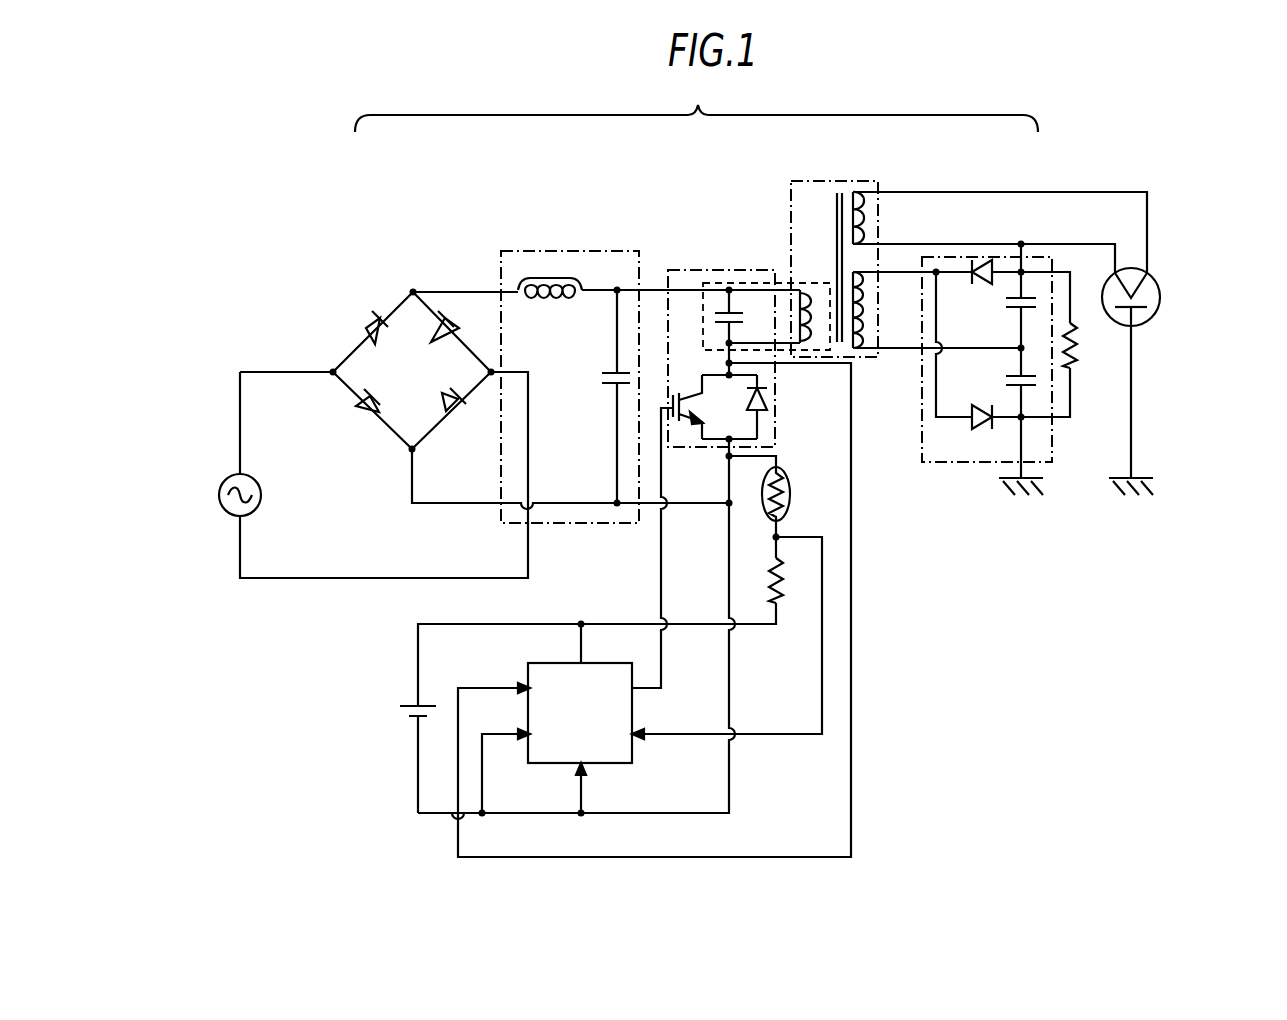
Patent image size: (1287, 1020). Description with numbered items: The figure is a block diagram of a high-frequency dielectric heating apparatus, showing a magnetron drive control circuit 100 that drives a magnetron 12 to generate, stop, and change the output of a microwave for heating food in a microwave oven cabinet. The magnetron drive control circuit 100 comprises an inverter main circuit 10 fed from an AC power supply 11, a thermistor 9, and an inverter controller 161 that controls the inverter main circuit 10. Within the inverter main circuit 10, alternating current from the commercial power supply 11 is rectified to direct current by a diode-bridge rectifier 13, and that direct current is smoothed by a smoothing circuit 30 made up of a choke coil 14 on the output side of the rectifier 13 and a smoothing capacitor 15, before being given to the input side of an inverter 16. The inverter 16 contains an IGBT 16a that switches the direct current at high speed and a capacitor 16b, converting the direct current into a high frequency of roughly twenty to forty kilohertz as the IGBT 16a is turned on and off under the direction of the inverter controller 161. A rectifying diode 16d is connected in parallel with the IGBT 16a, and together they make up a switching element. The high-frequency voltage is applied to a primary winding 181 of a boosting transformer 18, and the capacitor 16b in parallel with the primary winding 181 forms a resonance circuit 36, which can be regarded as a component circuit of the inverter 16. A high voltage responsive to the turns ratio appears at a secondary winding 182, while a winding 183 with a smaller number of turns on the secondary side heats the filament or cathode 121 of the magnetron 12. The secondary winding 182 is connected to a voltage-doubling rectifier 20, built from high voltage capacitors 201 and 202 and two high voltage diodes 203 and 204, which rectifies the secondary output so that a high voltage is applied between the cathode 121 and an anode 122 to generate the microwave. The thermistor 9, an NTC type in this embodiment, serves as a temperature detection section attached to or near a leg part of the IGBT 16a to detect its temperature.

The magnetron drive control circuit 100 is at (240, 314).
The inverter main circuit 10 is at (698, 105).
The AC power supply 11 is at (262, 492).
The rectifier 13 is at (425, 378).
The choke coil 14 is at (548, 278).
The smoothing capacitor 15 is at (606, 390).
The smoothing circuit 30 is at (523, 250).
The resonance circuit 36 is at (757, 278).
The inverter 16 is at (729, 414).
The IGBT 16a is at (700, 383).
The capacitor 16b is at (723, 287).
The rectifying diode 16d is at (765, 400).
The inverter controller 161 is at (622, 745).
The thermistor 9 is at (791, 487).
The boosting transformer 18 is at (868, 265).
The primary winding 181 is at (802, 294).
The secondary winding 182 is at (877, 330).
The winding 183 is at (872, 232).
The voltage-doubling rectifier 20 is at (1022, 374).
The high voltage capacitor 201 is at (1030, 386).
The high voltage capacitor 202 is at (1027, 297).
The high voltage diode 203 is at (986, 285).
The high voltage diode 204 is at (980, 405).
The magnetron 12 is at (1183, 293).
The filament (cathode) 121 is at (1157, 283).
The anode 122 is at (1138, 301).